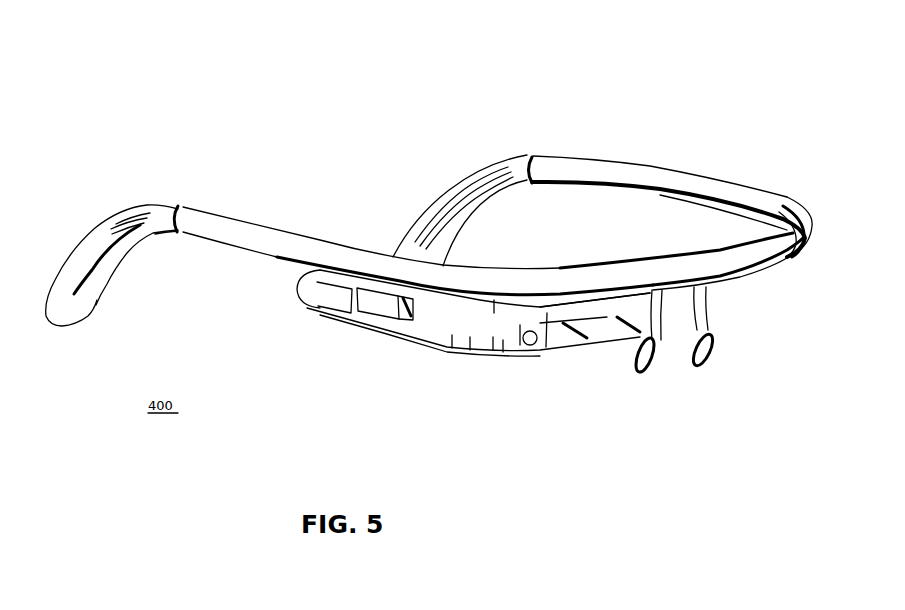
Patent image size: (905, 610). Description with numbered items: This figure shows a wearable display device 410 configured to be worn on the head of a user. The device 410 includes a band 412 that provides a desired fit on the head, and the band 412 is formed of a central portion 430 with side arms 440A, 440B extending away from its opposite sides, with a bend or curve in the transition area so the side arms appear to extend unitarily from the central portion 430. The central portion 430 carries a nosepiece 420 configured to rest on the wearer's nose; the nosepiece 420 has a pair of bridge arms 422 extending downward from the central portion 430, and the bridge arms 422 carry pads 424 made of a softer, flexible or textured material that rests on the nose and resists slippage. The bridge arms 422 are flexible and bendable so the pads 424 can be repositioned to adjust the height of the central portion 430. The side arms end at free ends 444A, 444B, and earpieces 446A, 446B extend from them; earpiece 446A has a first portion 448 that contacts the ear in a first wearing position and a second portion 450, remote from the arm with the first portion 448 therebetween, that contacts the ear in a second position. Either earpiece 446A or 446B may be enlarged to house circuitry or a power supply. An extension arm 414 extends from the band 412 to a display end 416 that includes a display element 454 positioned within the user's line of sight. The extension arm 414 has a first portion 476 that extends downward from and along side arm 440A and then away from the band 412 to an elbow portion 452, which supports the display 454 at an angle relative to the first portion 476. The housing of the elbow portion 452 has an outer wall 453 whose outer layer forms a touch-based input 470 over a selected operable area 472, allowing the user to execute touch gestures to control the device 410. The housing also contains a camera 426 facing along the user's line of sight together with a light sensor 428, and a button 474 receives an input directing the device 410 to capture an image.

The device 410 is at (779, 114).
The band 412 is at (785, 198).
The extension arm 414 is at (288, 246).
The display end 416 is at (540, 337).
The nosepiece 420 is at (685, 339).
The bridge arms 422 is at (708, 320).
The pads 424 is at (713, 366).
The camera 426 is at (540, 342).
The sensor 428 is at (522, 338).
The central portion 430 is at (756, 262).
The side arm 440A is at (364, 253).
The side arm 440B is at (644, 170).
The free end 444A is at (180, 213).
The free end 444B is at (544, 162).
The earpiece 446A is at (92, 250).
The earpiece 446B is at (458, 183).
The first portion 448 is at (155, 234).
The second portion 450 is at (96, 296).
The elbow portion 452 is at (500, 347).
The outer wall 453 is at (494, 313).
The display element 454 is at (590, 340).
The touch-based input 470 is at (330, 308).
The operable area 472 is at (367, 327).
The button 474 is at (444, 305).
The first portion 476 is at (372, 331).